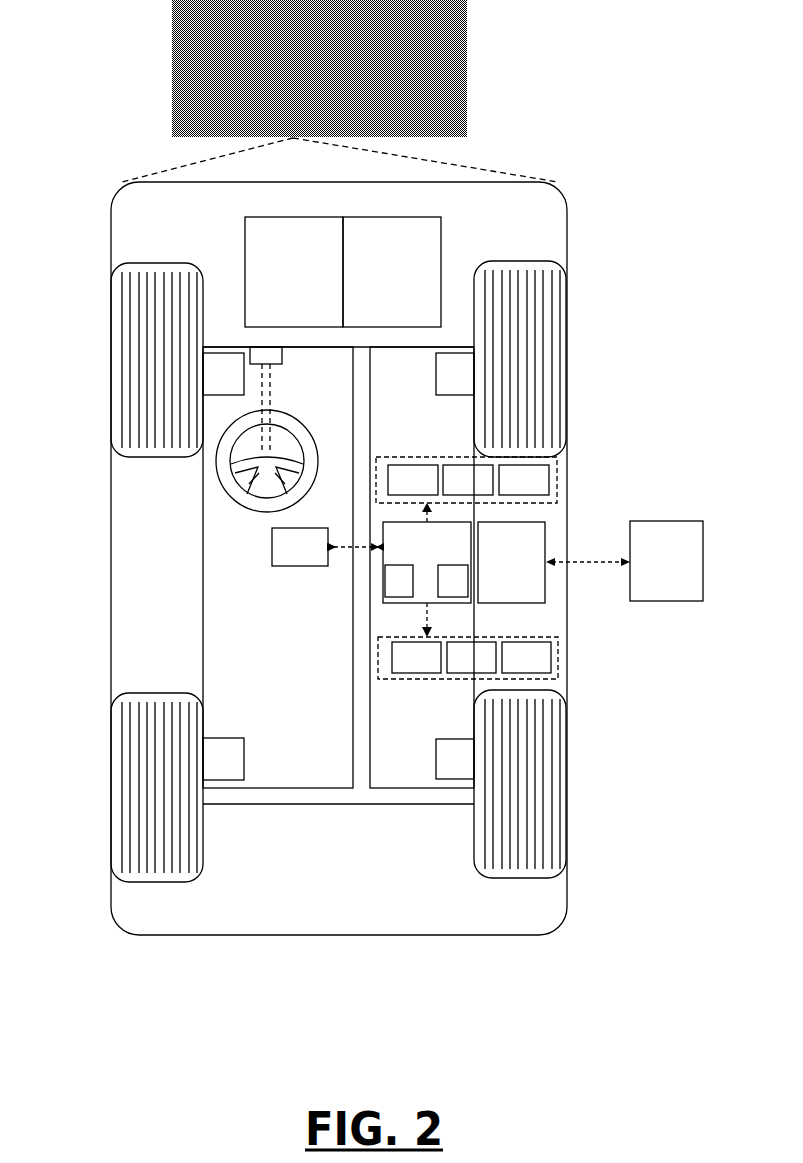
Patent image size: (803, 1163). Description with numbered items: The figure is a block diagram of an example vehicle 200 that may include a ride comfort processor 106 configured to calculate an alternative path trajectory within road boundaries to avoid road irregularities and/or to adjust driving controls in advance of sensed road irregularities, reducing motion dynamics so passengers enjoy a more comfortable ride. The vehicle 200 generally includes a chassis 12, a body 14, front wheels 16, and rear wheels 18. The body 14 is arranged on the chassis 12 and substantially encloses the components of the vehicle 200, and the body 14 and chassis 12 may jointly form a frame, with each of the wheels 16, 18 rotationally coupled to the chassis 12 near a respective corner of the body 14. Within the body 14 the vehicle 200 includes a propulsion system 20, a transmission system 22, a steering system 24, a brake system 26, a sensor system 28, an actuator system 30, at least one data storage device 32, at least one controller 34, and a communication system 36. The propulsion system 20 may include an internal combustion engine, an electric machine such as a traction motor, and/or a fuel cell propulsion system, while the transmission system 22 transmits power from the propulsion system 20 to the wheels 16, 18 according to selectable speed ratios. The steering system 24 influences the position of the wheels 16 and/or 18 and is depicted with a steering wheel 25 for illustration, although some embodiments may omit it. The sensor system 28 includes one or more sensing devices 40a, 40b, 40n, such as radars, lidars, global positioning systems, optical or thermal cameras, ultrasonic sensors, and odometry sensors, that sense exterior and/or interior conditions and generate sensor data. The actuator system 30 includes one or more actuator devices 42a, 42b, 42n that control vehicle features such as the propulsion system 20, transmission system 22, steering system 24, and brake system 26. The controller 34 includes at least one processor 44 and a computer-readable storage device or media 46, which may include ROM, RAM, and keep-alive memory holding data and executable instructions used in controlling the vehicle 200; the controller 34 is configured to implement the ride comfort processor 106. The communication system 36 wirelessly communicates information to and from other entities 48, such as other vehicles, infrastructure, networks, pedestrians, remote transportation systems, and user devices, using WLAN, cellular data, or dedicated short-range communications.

The vehicle 200 is at (172, 84).
The body 14 is at (111, 522).
The chassis 12 is at (363, 806).
The front wheels 16 is at (142, 346).
The rear wheels 18 is at (142, 796).
The propulsion system 20 is at (283, 282).
The transmission system 22 is at (381, 282).
The steering system 24 is at (242, 522).
The steering wheel 25 is at (302, 420).
The brake system 26 is at (212, 384).
The sensor system 28 is at (420, 456).
The actuator system 30 is at (404, 682).
The data storage device 32 is at (289, 558).
The controller 34 is at (416, 558).
The communication system 36 is at (500, 572).
The sensing device 40a is at (398, 489).
The sensing device 40b is at (453, 489).
The sensing device 40n is at (509, 489).
The actuator device 42a is at (401, 666).
The actuator device 42b is at (456, 666).
The actuator device 42n is at (511, 666).
The processor 44 is at (389, 589).
The computer-readable storage device or media 46 is at (443, 589).
The other entities 48 is at (656, 570).
The ride comfort processor 106 is at (403, 549).